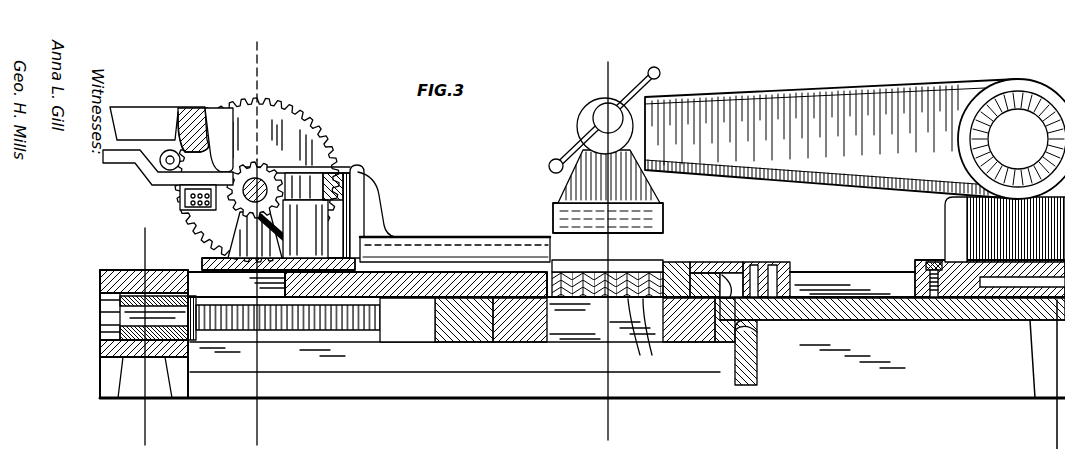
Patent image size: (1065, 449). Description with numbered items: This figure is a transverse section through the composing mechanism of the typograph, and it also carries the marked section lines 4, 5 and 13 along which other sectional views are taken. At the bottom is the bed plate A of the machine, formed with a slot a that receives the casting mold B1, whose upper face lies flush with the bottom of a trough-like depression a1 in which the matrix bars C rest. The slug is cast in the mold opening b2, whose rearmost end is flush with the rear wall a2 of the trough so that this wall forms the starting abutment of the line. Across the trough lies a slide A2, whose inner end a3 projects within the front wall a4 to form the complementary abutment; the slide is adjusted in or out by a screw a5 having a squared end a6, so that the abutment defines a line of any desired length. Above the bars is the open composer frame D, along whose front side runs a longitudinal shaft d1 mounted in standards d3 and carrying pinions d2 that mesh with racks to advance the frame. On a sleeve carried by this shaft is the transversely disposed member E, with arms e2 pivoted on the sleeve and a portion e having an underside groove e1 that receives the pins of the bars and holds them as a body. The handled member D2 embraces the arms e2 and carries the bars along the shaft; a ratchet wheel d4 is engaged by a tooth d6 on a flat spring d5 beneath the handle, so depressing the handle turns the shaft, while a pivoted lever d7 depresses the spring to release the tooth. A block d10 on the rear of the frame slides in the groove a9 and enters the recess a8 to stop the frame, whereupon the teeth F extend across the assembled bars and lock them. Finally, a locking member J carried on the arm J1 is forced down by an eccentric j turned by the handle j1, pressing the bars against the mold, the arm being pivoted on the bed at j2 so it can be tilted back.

The bed plate A is at (893, 395).
The slide A2 is at (408, 300).
The slot a is at (500, 336).
The trough-like depression a1 is at (477, 295).
The rear wall of the trough a2 is at (712, 262).
The inner end of the slide a3 is at (552, 259).
The front wall of the trough a4 is at (447, 300).
The screw a5 is at (270, 331).
The squared end a6 is at (100, 332).
The recess a8 is at (728, 305).
The groove or transverse depression a9 is at (879, 283).
The casting mold B1 is at (522, 338).
The mold opening b2 is at (575, 322).
The matrix bars C is at (646, 334).
The composer frame D is at (757, 262).
The handled member D2 is at (155, 118).
The longitudinal shaft d1 is at (294, 183).
The pinions d2 is at (263, 118).
The standards d3 is at (244, 233).
The ratchet wheel d4 is at (258, 187).
The flat spring d5 is at (288, 239).
The tooth or pawl d6 is at (177, 210).
The pivoted lever d7 is at (115, 162).
The lug or block d10 is at (762, 333).
The transversely disposed member E is at (369, 214).
The grooved portion of member E e is at (538, 258).
The groove e1 is at (440, 250).
The arms e2 is at (332, 176).
The teeth of the composer frame F is at (643, 256).
The locking member J is at (577, 191).
The arm J1 is at (830, 80).
The eccentric j is at (658, 103).
The handle j1 is at (650, 68).
The pivot j2 is at (1016, 112).
The section line 13 is at (222, 30).
The section line 4 is at (138, 431).
The section line 5 is at (600, 422).